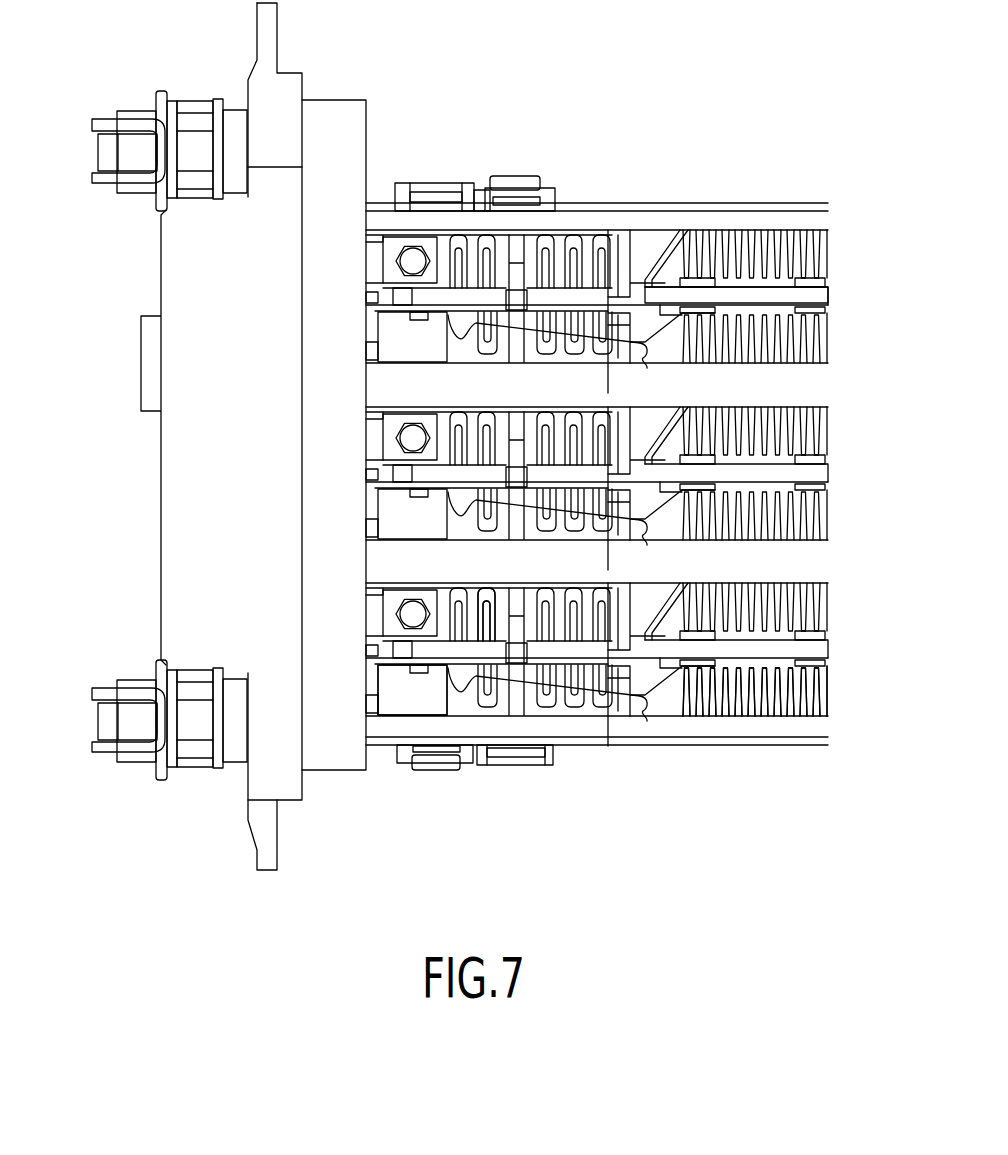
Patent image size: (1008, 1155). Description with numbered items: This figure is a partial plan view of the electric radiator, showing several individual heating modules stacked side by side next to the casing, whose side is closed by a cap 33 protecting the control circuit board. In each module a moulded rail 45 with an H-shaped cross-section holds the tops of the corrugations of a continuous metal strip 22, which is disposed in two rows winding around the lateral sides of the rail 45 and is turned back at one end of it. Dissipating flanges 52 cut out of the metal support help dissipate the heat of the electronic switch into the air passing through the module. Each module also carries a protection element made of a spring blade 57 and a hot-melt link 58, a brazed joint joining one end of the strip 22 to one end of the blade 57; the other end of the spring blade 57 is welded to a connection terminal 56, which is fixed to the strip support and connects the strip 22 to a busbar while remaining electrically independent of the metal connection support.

The metal strip 22 is at (812, 684).
The cap 33 is at (170, 500).
The moulded rail 45 is at (821, 293).
The dissipating flange 52 is at (488, 588).
The connection terminal 56 is at (408, 697).
The spring blade 57 is at (589, 348).
The hot-melt link 58 is at (655, 792).